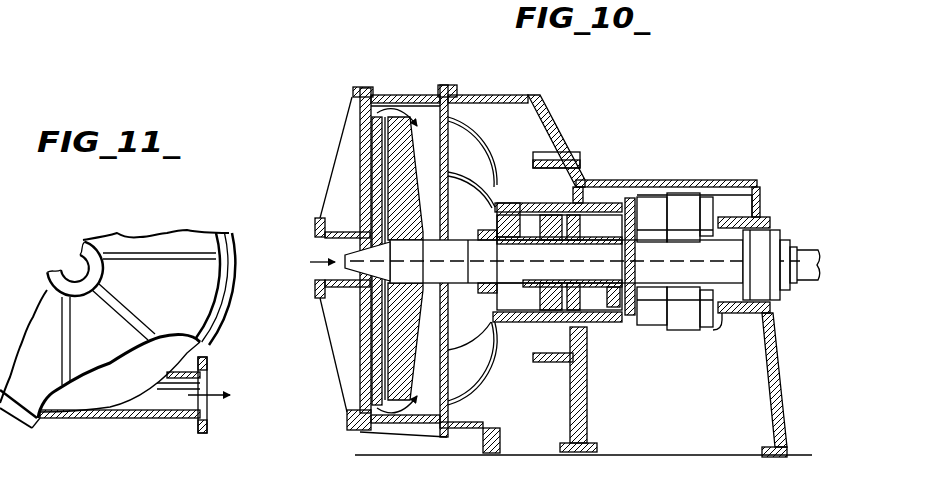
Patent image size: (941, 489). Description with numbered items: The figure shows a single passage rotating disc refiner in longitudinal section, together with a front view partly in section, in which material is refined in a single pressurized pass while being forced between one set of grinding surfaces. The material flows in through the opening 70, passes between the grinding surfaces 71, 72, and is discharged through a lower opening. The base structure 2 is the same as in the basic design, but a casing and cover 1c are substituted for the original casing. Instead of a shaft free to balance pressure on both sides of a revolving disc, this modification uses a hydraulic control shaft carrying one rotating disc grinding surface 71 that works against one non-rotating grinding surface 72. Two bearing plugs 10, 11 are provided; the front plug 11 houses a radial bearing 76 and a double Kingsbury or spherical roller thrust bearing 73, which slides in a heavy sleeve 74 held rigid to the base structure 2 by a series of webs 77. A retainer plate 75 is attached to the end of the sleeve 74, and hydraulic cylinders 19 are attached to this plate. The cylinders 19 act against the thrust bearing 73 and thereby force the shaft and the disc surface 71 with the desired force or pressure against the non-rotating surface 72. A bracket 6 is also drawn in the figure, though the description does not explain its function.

In FIG. 10, the casing and cover 1c is at (336, 124).
In FIG. 11, the casing and cover 1c is at (172, 238).
In FIG. 10, the base structure 2 is at (727, 180).
In FIG. 10, the bracket 6 is at (722, 310).
In FIG. 10, the bearing plug 10 is at (768, 248).
In FIG. 10, the front bearing plug 11 is at (523, 324).
In FIG. 10, the hydraulic cylinders 19 is at (686, 200).
In FIG. 10, the opening 70 is at (322, 268).
In FIG. 11, the opening 70 is at (77, 257).
In FIG. 10, the disc grinding surface 71 is at (387, 169).
In FIG. 10, the non-rotating grinding surface 72 is at (366, 176).
In FIG. 11, the non-rotating grinding surface 72 is at (207, 405).
In FIG. 10, the thrust bearing 73 is at (586, 300).
In FIG. 10, the heavy sleeve 74 is at (547, 330).
In FIG. 10, the retainer plate 75 is at (597, 227).
In FIG. 10, the radial bearing 76 is at (486, 302).
In FIG. 10, the webs 77 is at (537, 143).